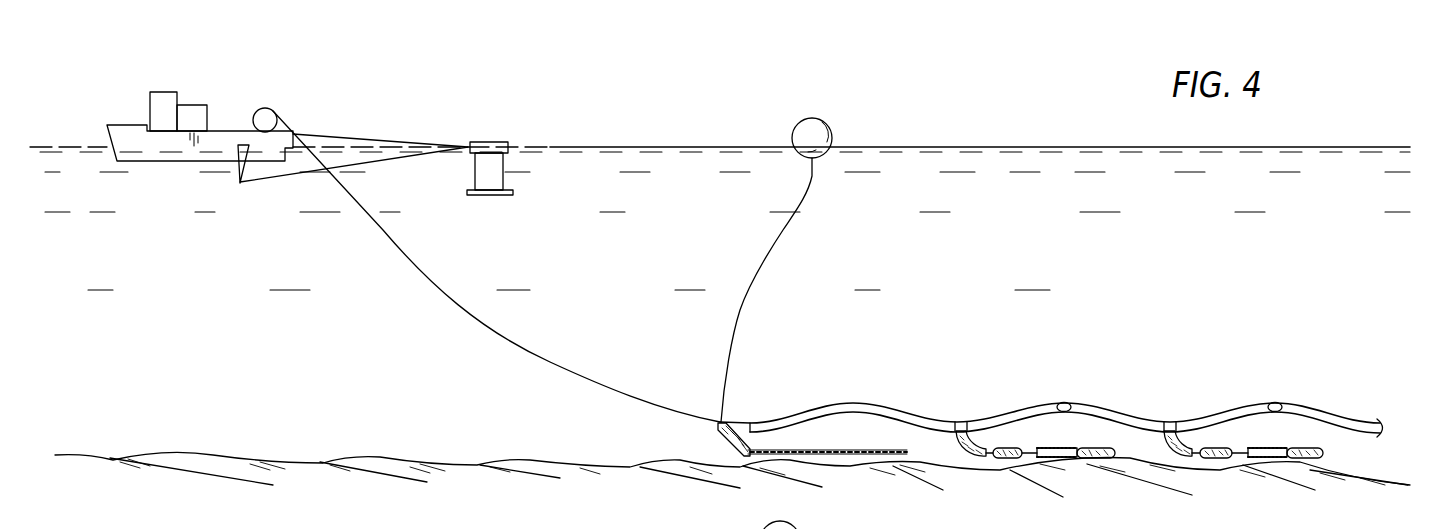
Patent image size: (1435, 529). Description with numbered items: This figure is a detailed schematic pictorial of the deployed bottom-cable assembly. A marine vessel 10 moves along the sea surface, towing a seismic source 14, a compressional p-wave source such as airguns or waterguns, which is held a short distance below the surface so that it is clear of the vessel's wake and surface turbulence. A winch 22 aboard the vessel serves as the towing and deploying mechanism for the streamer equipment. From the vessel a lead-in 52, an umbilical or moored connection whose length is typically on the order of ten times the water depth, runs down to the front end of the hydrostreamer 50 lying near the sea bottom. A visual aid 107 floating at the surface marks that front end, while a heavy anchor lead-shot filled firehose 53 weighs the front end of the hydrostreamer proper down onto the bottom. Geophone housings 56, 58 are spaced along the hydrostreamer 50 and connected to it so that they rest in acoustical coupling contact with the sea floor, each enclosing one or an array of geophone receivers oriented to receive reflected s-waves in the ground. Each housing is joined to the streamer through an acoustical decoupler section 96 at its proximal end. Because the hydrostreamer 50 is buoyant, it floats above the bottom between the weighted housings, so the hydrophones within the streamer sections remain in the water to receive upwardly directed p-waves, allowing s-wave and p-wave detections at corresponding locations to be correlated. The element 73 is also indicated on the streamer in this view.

The marine vessel 10 is at (162, 161).
The seismic source 14 is at (513, 196).
The winch 22 is at (276, 108).
The hydrostreamer 50 is at (1064, 402).
The lead-in 52 is at (468, 307).
The anchor lead-shot filled firehose 53 is at (845, 451).
The housing 56 is at (1064, 460).
The housing 58 is at (1267, 461).
The streamer cable 73 is at (1250, 393).
The acoustical decoupler section 96 is at (992, 461).
The visual aid 107 is at (827, 123).